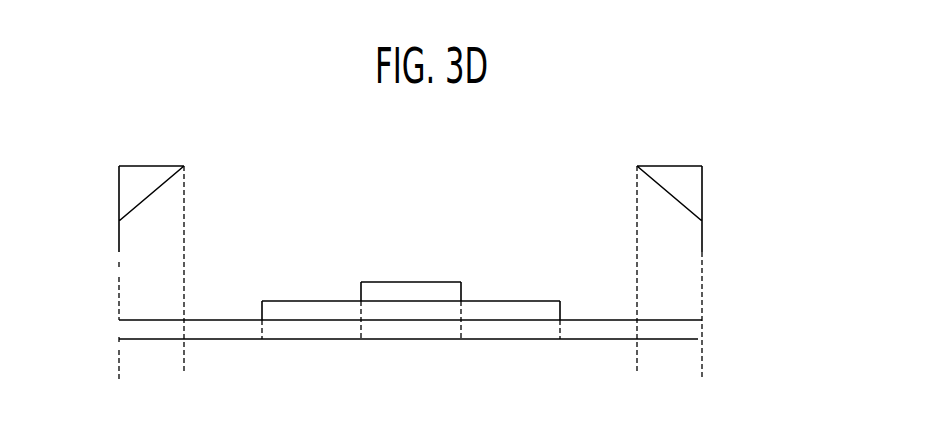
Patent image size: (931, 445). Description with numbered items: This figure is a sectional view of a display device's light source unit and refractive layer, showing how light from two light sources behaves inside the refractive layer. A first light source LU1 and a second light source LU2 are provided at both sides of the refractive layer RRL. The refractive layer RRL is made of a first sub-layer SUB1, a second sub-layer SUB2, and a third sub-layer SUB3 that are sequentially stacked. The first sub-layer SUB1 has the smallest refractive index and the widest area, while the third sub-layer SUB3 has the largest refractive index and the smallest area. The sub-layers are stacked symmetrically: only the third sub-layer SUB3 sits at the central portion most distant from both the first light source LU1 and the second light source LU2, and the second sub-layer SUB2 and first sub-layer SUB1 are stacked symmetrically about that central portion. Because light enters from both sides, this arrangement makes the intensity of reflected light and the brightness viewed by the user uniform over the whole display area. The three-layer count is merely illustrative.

The first light source LU1 is at (126, 181).
The second light source LU2 is at (696, 183).
The first sub-layer SUB1 is at (697, 331).
The second sub-layer SUB2 is at (558, 312).
The third sub-layer SUB3 is at (455, 293).
The refractive layer RRL is at (478, 309).